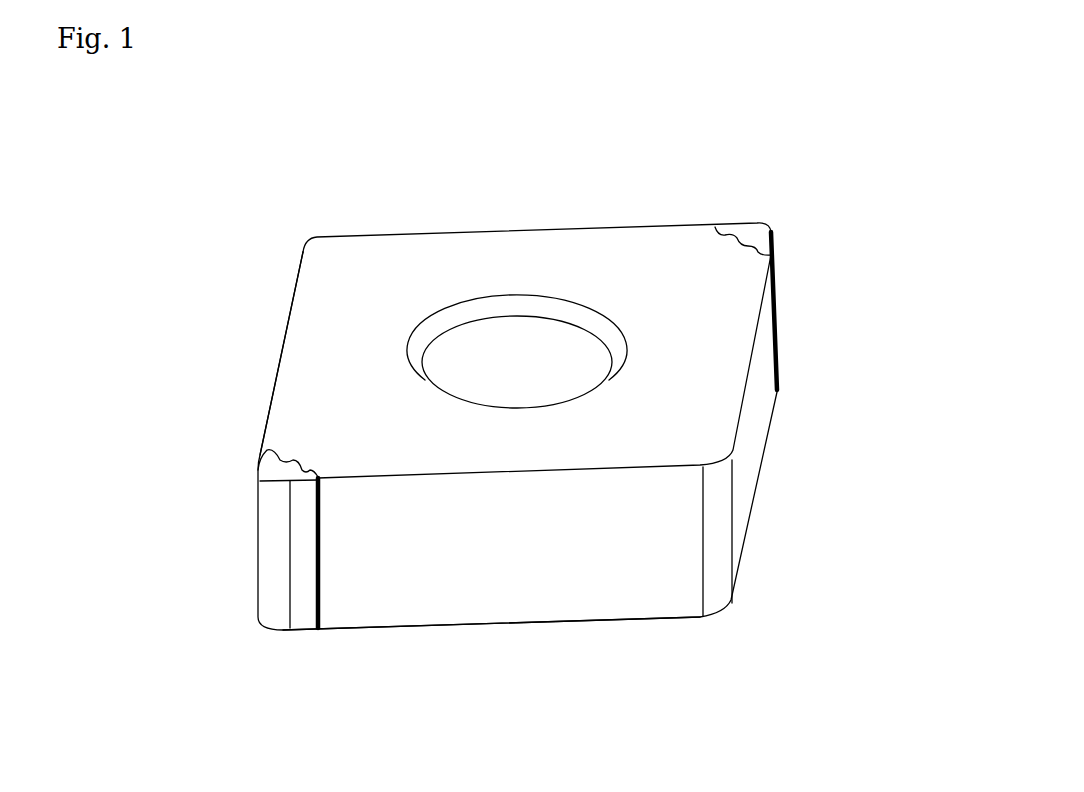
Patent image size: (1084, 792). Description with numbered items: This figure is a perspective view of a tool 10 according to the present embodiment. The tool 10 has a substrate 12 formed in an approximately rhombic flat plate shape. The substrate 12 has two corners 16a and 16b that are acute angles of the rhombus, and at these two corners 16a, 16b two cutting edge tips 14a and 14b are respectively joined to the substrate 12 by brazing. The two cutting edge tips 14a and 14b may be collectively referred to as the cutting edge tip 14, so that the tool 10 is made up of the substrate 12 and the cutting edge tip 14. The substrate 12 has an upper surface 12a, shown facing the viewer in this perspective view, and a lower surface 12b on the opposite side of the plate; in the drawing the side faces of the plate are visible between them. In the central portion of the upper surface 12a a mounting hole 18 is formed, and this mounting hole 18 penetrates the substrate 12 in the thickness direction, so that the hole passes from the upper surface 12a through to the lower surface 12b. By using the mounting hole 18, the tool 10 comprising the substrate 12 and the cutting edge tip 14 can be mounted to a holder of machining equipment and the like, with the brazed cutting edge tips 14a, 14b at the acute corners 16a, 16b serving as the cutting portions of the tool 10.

The tool 10 is at (512, 402).
The substrate 12 is at (473, 314).
The upper surface 12a is at (342, 342).
The lower surface 12b is at (370, 632).
The cutting edge tip 14 is at (512, 396).
The cutting edge tip 14a is at (277, 502).
The cutting edge tip 14b is at (770, 228).
The corner 16a is at (243, 465).
The corner 16b is at (755, 205).
The mounting hole 18 is at (513, 303).